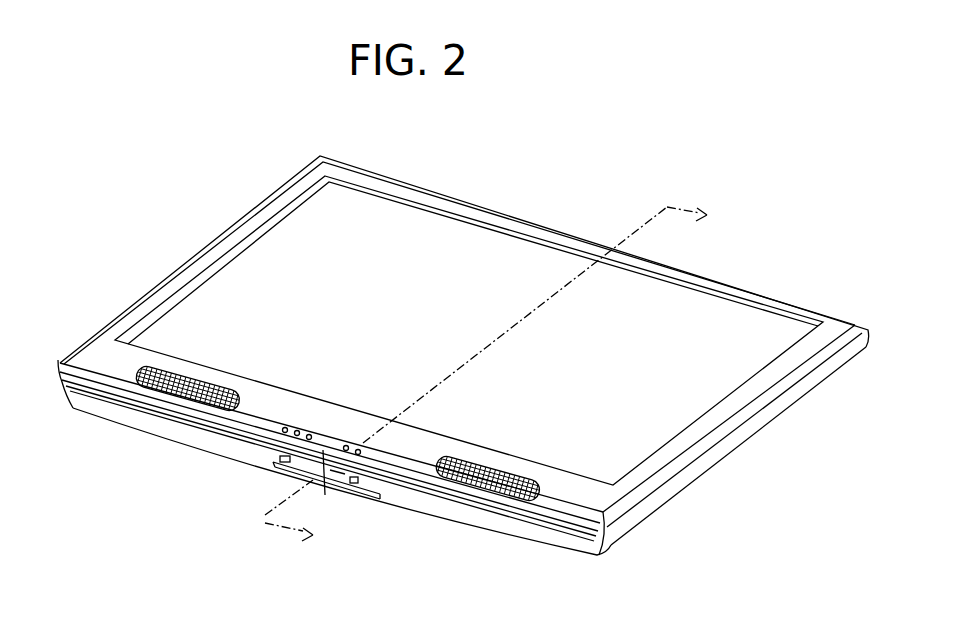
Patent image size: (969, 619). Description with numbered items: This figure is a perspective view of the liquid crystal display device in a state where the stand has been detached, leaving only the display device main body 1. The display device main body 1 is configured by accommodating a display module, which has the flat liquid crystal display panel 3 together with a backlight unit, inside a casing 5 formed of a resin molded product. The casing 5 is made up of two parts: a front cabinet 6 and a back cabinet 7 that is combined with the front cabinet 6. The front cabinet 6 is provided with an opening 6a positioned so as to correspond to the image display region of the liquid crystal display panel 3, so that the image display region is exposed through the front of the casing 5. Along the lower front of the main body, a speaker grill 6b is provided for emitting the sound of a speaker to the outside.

The display device main body 1 is at (482, 205).
The liquid crystal display panel 3 is at (282, 250).
The casing 5 is at (688, 530).
The front cabinet 6 is at (763, 298).
The opening 6a is at (566, 250).
The speaker grill 6b is at (150, 395).
The back cabinet 7 is at (763, 420).